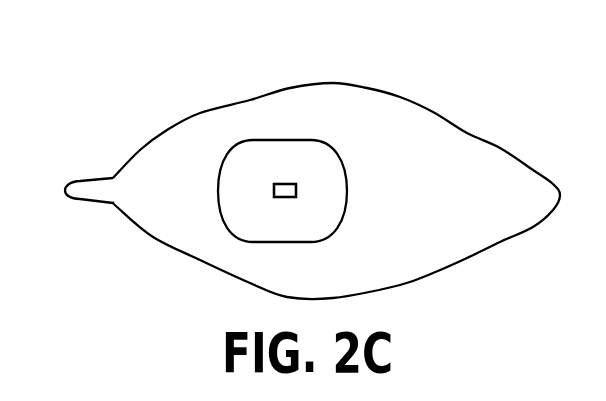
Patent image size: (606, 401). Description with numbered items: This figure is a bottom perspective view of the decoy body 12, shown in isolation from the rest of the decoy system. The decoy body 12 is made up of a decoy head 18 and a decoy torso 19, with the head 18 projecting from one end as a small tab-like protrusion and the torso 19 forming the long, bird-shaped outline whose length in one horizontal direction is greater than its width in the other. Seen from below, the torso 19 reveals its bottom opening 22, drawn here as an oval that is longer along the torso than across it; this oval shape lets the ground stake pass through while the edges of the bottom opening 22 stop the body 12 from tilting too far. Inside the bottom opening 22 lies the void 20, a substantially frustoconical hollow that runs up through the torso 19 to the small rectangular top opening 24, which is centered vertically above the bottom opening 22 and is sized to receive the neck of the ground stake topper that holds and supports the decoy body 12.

The decoy body 12 is at (92, 68).
The decoy head 18 is at (97, 188).
The decoy torso 19 is at (423, 250).
The void 20 is at (335, 187).
The bottom opening 22 is at (282, 125).
The top opening 24 is at (273, 190).